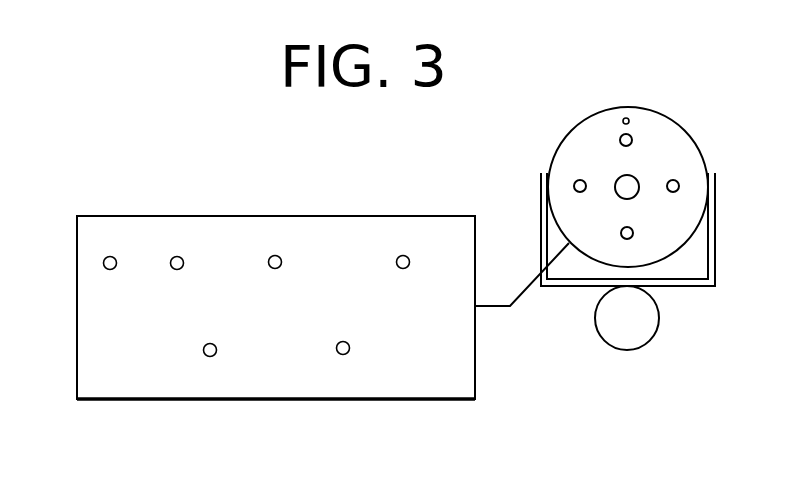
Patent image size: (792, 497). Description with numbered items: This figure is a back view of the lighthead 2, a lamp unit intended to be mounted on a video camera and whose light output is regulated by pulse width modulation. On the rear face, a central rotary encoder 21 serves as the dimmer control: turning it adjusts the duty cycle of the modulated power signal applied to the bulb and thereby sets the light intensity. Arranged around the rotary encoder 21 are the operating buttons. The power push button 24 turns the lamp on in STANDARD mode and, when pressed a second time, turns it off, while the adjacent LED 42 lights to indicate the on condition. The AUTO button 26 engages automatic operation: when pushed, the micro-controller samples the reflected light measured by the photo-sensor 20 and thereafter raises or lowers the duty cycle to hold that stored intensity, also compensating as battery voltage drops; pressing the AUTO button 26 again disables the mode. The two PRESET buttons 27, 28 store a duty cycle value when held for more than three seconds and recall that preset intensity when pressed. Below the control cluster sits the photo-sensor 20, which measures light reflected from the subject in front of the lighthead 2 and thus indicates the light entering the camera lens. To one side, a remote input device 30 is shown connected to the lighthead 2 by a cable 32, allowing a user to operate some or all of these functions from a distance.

The lighthead 2 is at (155, 134).
The photo-sensor 20 is at (647, 343).
The rotary encoder 21 is at (639, 183).
The power push button 24 is at (622, 135).
The AUTO button 26 is at (630, 240).
The PRESET button 27 is at (575, 182).
The PRESET button 28 is at (679, 186).
The remote input device 30 is at (474, 367).
The cable 32 is at (532, 282).
The LED 42 is at (629, 118).